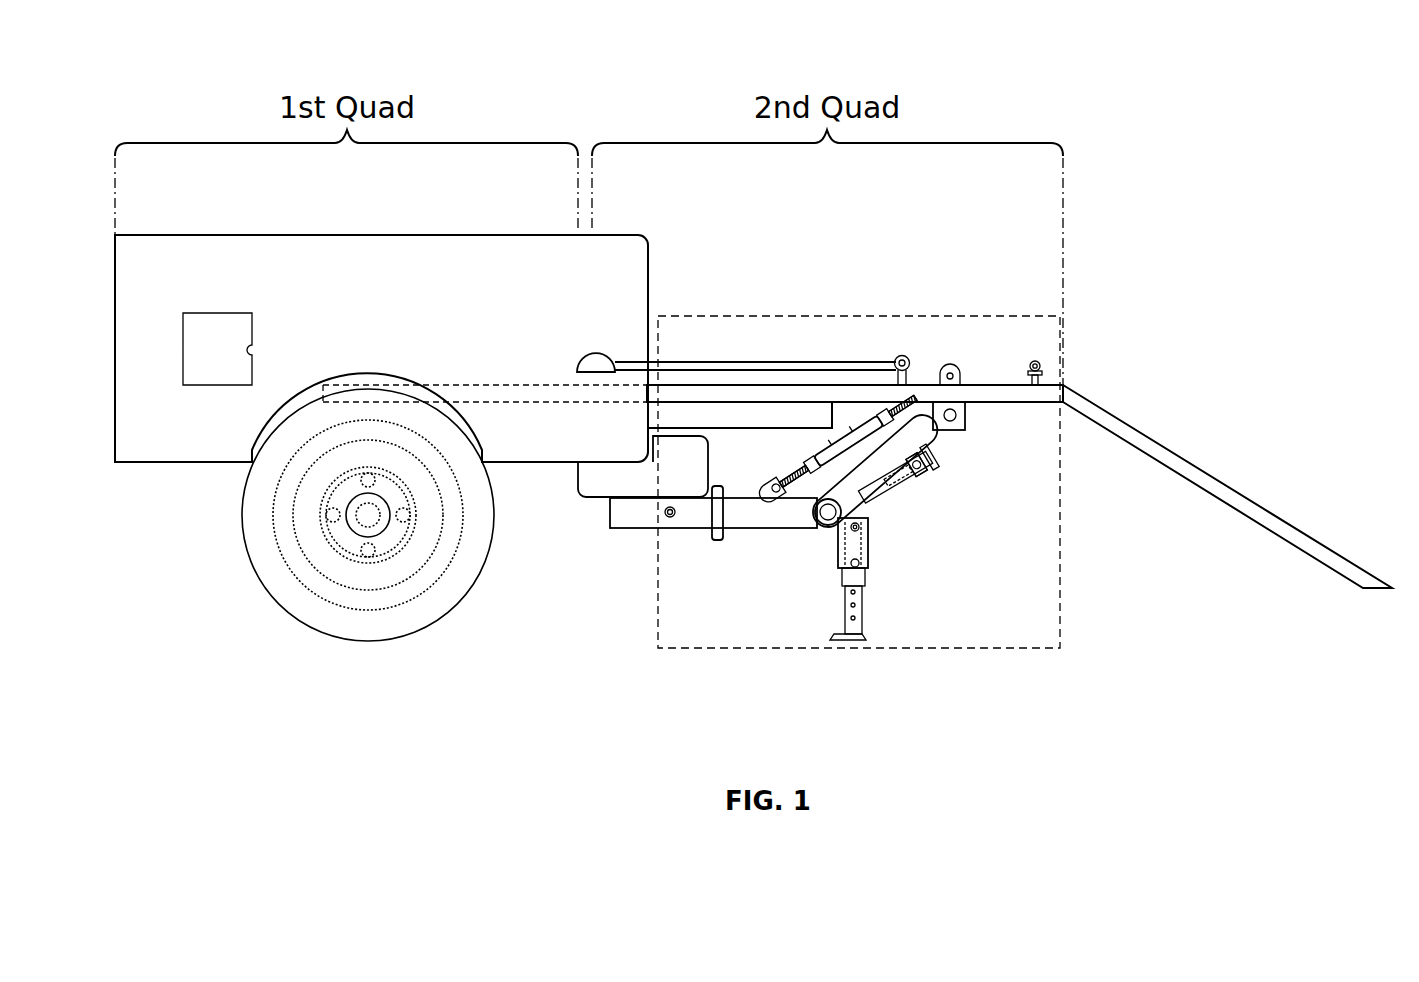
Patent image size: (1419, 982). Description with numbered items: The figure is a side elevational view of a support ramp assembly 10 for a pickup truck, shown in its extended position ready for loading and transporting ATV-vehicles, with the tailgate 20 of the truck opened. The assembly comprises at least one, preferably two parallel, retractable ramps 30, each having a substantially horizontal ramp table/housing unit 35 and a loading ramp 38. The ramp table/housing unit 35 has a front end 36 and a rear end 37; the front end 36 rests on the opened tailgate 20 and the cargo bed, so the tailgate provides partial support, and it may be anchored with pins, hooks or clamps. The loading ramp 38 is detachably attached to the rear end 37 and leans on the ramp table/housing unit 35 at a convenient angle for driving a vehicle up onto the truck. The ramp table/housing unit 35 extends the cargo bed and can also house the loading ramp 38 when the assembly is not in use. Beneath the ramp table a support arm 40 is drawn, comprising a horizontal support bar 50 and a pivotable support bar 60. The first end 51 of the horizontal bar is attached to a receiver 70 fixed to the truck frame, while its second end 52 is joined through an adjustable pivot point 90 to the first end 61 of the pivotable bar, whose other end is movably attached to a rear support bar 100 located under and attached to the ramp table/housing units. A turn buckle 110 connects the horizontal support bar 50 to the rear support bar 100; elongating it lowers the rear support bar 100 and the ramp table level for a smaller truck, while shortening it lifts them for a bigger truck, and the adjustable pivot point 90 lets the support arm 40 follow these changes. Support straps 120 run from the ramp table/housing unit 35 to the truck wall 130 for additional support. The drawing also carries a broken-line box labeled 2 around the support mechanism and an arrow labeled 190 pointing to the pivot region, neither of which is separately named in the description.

The support ramp assembly 10 is at (753, 404).
The truck wall 130 is at (424, 305).
The front end 36 is at (490, 385).
The support strap 120 is at (688, 362).
The tailgate 20 is at (757, 417).
The turn buckle 110 is at (837, 379).
The ramp table/housing unit 35 is at (863, 393).
The rear end 37 is at (1053, 393).
The retractable ramp 30 is at (904, 336).
The loading ramp 38 is at (1226, 487).
The rear support bar 100 is at (962, 410).
The pivotable support bar 60 is at (895, 462).
The first end of the pivotable support bar 61 is at (903, 503).
The second quadrant region 2 is at (1060, 617).
The receiver 70 is at (705, 526).
The first end of the horizontal support bar 51 is at (742, 517).
The support arm 40 is at (758, 560).
The horizontal support bar 50 is at (697, 597).
The second end of the horizontal support bar 52 is at (812, 520).
The adjustable pivot point 90 is at (855, 614).
The jack assembly 190 is at (906, 618).